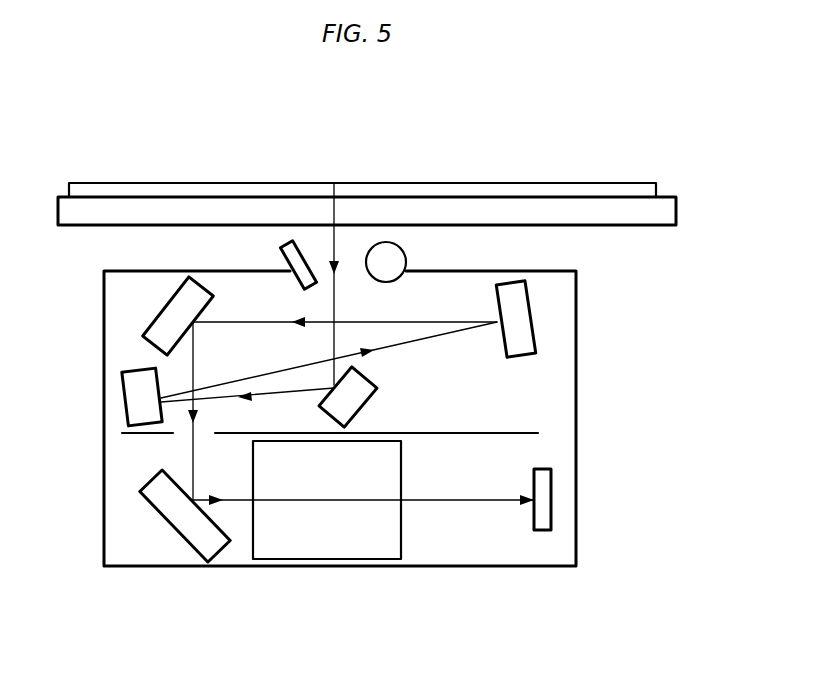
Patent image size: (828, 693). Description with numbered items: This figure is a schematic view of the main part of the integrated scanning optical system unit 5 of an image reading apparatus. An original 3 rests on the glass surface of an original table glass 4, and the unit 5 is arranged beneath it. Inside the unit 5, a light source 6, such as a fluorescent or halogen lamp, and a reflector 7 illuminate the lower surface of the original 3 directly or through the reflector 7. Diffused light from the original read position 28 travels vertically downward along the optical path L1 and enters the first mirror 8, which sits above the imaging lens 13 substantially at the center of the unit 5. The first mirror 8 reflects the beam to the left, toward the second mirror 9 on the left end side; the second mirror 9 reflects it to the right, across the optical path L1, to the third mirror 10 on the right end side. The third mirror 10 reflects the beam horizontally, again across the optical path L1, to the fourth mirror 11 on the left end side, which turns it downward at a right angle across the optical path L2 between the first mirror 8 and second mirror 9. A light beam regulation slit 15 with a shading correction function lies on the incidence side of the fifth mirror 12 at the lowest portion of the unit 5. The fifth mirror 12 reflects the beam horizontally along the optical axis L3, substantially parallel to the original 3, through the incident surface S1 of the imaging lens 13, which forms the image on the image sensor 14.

The original 3 is at (448, 188).
The original table glass 4 is at (668, 211).
The integrated scanning optical system unit 5 is at (577, 527).
The light source 6 is at (400, 260).
The reflector 7 is at (290, 258).
The first mirror 8 is at (352, 395).
The second mirror 9 is at (140, 388).
The third mirror 10 is at (520, 340).
The fourth mirror 11 is at (170, 326).
The fifth mirror 12 is at (188, 521).
The imaging lens 13 is at (373, 522).
The image sensor 14 is at (543, 510).
The light beam regulation slit 15 is at (152, 436).
The original read position 28 is at (334, 181).
The optical path L1 is at (334, 293).
The optical path L2 is at (287, 393).
The optical axis L3 is at (237, 500).
The incident surface S1 is at (251, 544).